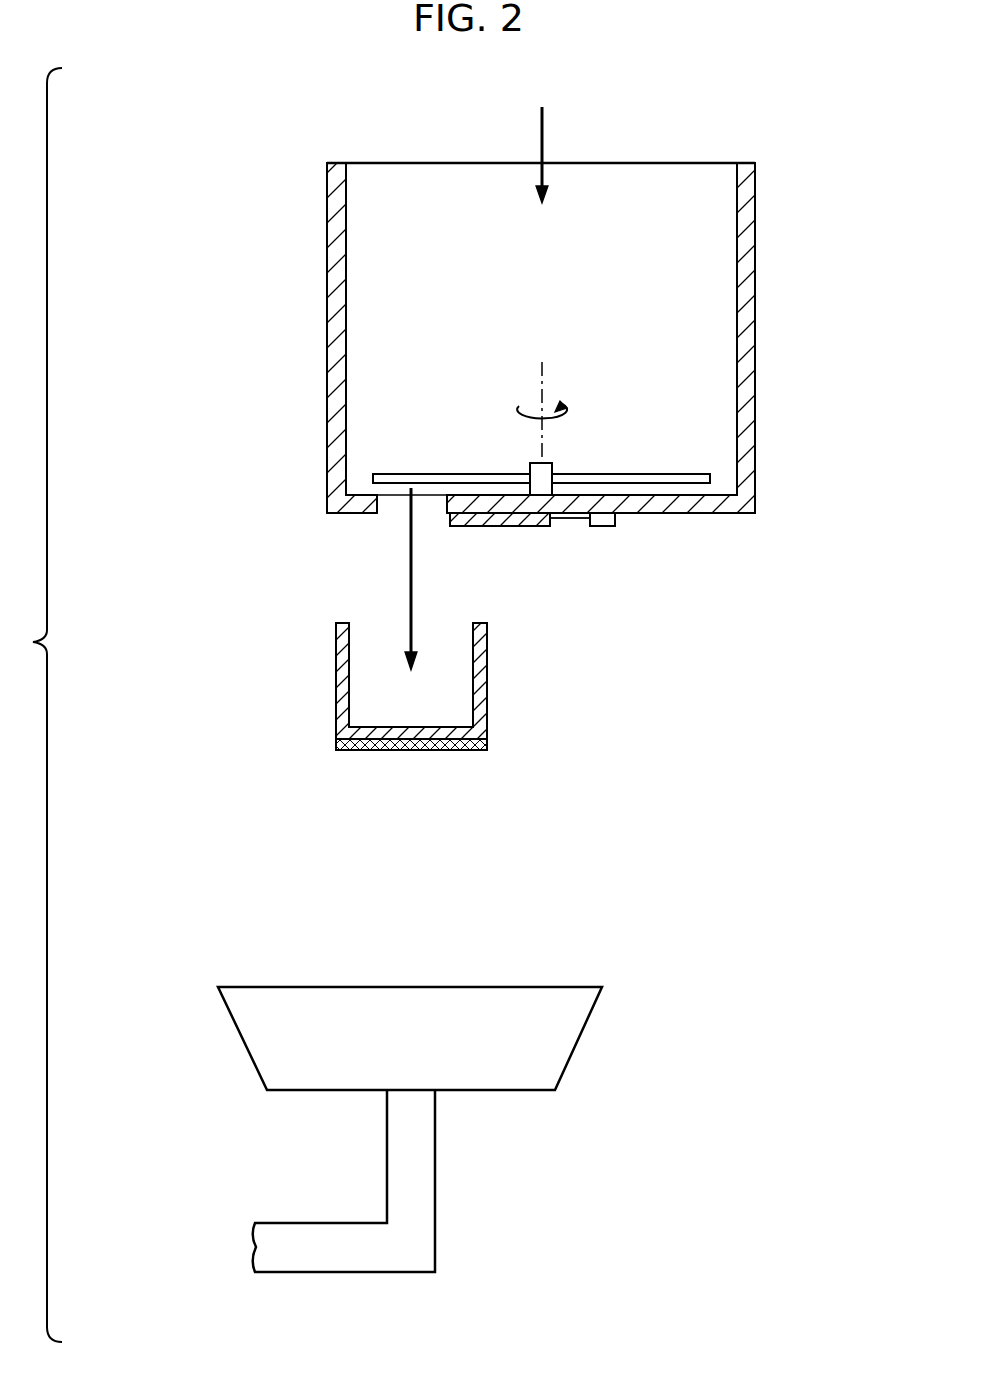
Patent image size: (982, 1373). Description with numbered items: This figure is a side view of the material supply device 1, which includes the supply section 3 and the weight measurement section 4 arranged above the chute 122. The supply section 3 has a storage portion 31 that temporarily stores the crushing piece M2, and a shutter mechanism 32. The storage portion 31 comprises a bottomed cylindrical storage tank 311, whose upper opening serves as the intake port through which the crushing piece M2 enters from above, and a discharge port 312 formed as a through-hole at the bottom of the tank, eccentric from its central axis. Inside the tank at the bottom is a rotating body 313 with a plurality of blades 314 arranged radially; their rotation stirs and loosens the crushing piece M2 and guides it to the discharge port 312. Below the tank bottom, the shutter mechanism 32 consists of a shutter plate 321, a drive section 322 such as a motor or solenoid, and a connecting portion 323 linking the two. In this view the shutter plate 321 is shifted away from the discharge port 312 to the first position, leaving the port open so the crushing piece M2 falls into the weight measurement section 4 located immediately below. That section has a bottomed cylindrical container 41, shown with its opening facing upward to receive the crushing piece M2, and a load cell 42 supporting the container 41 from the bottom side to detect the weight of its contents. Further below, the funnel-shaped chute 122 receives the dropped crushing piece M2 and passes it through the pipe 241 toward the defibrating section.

The material supply device 1 is at (165, 210).
The supply section 3 is at (542, 370).
The storage portion 31 is at (577, 379).
The storage tank 311 is at (757, 337).
The discharge port 312 is at (384, 498).
The rotating body 313 is at (650, 475).
The blades 314 is at (437, 475).
The shutter mechanism 32 is at (575, 571).
The shutter plate 321 is at (517, 522).
The drive section 322 is at (597, 520).
The connecting portion 323 is at (570, 520).
The weight measurement section 4 is at (461, 691).
The container 41 is at (484, 676).
The load cell 42 is at (487, 748).
The chute 122 is at (566, 1042).
The pipe 241 is at (330, 1263).
The crushing piece M2 is at (545, 133).